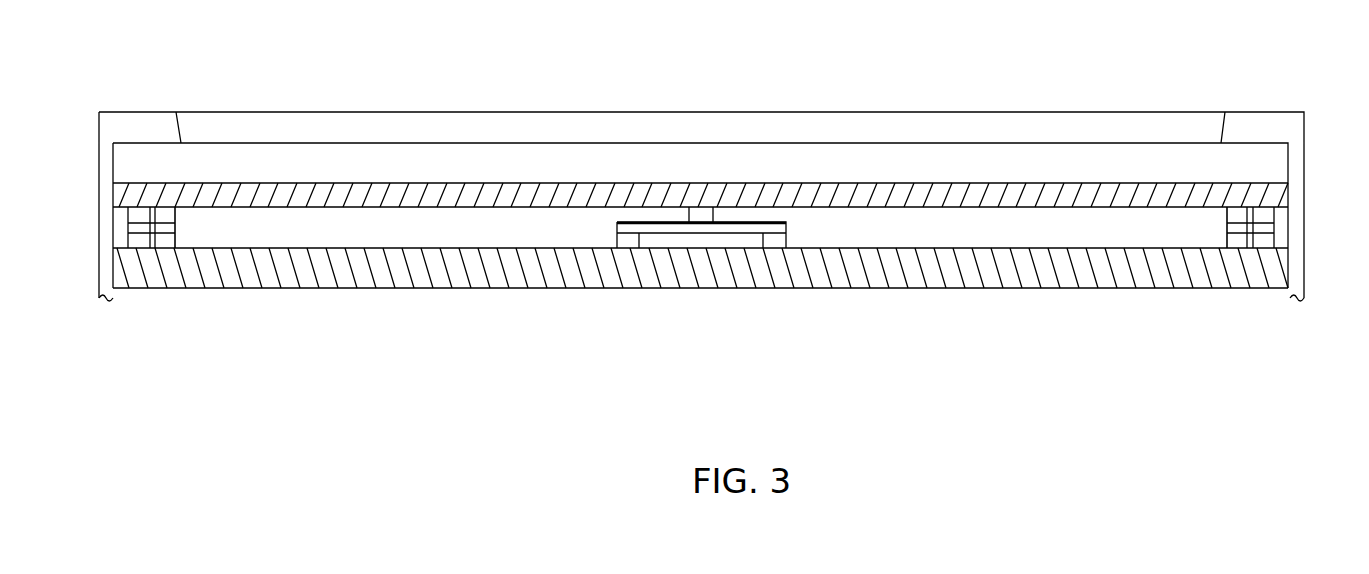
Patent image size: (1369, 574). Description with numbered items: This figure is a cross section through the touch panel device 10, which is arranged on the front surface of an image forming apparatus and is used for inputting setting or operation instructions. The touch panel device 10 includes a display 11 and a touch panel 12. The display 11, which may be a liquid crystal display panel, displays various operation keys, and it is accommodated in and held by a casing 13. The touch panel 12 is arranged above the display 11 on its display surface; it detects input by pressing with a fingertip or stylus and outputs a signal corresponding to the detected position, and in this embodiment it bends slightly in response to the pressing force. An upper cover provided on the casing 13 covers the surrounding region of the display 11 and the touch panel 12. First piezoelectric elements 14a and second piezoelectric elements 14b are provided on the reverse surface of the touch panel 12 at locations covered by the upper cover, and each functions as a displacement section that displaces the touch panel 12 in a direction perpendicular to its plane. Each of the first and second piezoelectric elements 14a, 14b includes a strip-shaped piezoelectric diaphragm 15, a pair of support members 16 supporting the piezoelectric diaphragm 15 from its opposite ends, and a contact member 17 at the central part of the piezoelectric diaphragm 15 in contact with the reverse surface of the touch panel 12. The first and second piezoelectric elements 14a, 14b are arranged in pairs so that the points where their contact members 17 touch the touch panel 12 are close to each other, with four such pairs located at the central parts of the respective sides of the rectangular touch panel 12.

The touch panel device 10 is at (950, 72).
The display 11 is at (972, 290).
The touch panel 12 is at (880, 183).
The casing 13 is at (132, 111).
The first piezoelectric element 14a is at (123, 227).
The second piezoelectric element 14b is at (192, 232).
The piezoelectric diaphragm 15 is at (752, 226).
The support member 16 is at (632, 240).
The contact member 17 is at (707, 207).